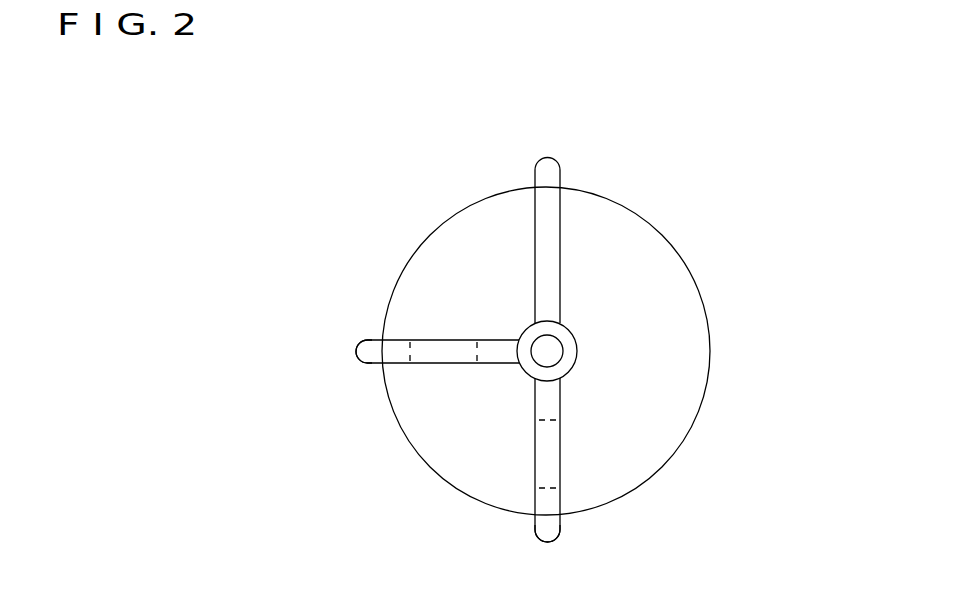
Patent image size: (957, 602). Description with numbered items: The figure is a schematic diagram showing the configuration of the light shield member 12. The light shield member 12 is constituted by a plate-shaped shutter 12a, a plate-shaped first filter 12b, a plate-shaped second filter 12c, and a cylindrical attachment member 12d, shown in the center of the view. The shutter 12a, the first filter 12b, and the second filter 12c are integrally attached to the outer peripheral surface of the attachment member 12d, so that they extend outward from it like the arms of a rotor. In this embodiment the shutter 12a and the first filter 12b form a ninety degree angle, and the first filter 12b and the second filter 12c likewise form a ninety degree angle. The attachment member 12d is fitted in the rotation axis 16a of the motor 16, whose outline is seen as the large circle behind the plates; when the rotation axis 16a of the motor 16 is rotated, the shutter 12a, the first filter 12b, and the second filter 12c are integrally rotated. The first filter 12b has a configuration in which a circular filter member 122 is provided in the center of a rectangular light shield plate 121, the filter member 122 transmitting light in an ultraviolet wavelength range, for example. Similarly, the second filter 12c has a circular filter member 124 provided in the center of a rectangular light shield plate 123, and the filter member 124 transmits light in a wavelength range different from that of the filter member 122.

The light shield member 12 is at (521, 347).
The shutter 12a is at (560, 247).
The first filter 12b is at (455, 365).
The second filter 12c is at (535, 475).
The attachment member 12d is at (575, 355).
The motor 16 is at (472, 202).
The rotation axis 16a is at (501, 301).
The light shield plate 121 is at (362, 340).
The filter member 122 is at (425, 353).
The light shield plate 123 is at (550, 530).
The filter member 124 is at (549, 433).